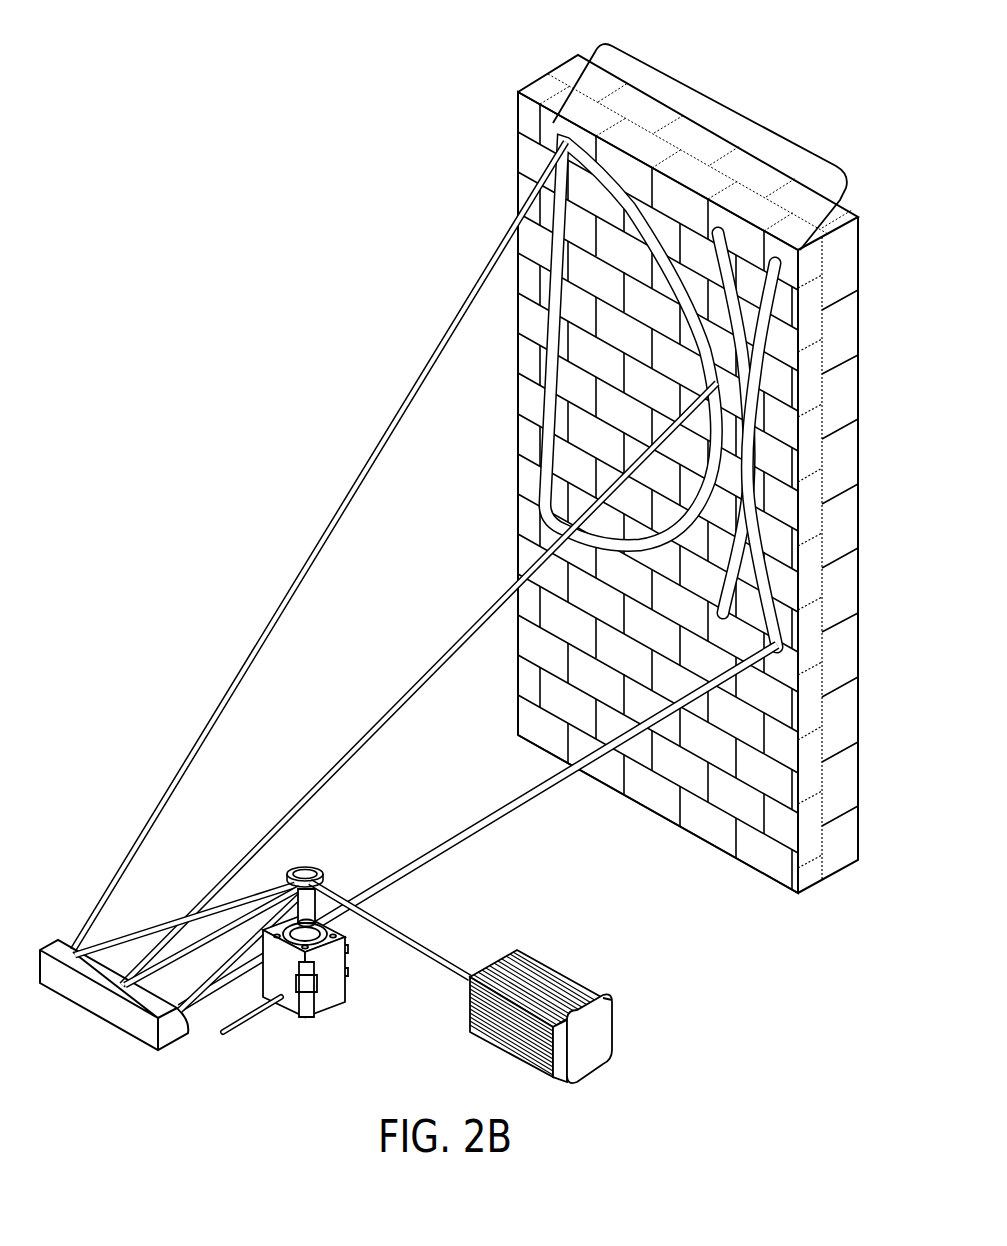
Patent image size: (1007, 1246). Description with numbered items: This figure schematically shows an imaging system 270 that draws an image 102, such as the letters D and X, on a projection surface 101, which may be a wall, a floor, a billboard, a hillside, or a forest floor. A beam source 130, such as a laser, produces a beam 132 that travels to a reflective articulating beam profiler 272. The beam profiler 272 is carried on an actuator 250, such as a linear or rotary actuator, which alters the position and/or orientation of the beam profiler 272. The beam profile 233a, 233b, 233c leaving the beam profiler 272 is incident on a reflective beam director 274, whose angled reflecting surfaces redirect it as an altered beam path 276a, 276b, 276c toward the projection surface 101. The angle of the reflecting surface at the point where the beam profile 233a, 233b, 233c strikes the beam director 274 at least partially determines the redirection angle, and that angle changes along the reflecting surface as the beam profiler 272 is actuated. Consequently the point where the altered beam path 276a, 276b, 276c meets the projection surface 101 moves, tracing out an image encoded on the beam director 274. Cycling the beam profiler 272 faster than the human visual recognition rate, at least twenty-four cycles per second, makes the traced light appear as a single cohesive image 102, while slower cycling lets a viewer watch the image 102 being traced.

The imaging system 270 is at (170, 77).
The projection surface 101 is at (518, 112).
The image 102 is at (734, 113).
The altered beam path 276a is at (373, 458).
The altered beam path 276b is at (472, 630).
The altered beam path 276c is at (542, 792).
The beam profiler 272 is at (312, 866).
The beam profile 233a is at (148, 928).
The beam profile 233b is at (157, 970).
The beam profile 233c is at (220, 983).
The beam director 274 is at (107, 1010).
The actuator 250 is at (340, 1005).
The beam 132 is at (430, 962).
The beam source 130 is at (570, 977).